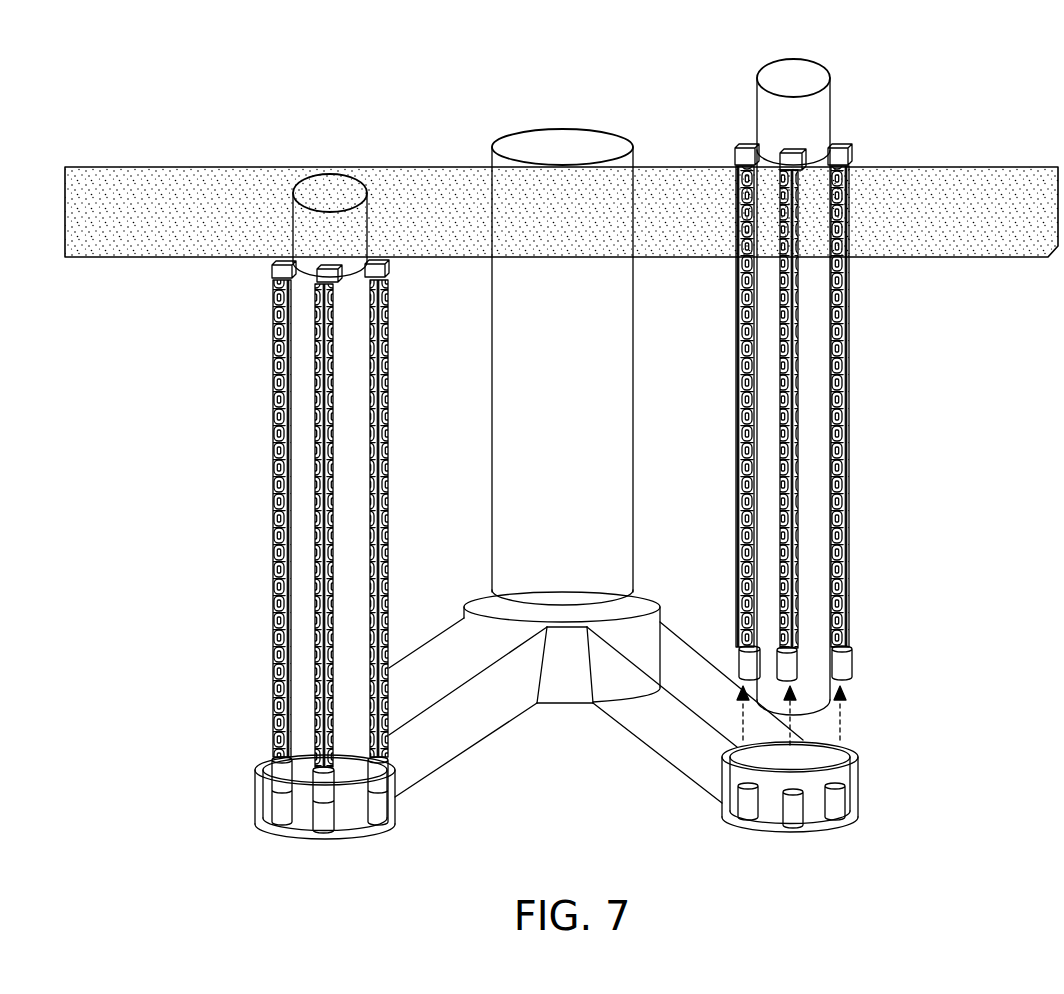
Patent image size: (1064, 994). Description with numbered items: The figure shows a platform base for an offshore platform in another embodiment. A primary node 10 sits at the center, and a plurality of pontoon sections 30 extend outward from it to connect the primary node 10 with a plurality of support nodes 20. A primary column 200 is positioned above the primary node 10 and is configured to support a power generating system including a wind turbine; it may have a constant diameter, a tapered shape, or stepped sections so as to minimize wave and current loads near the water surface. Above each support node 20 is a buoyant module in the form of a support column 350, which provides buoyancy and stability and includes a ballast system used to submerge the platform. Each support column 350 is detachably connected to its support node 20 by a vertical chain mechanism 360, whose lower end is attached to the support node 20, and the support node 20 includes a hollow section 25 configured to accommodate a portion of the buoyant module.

The primary node 10 is at (643, 588).
The support node 20 is at (255, 795).
The hollow section 25 is at (817, 813).
The pontoon section 30 is at (660, 758).
The primary column 200 is at (633, 145).
The support column 350 is at (340, 183).
The vertical chain mechanism 360 is at (383, 410).